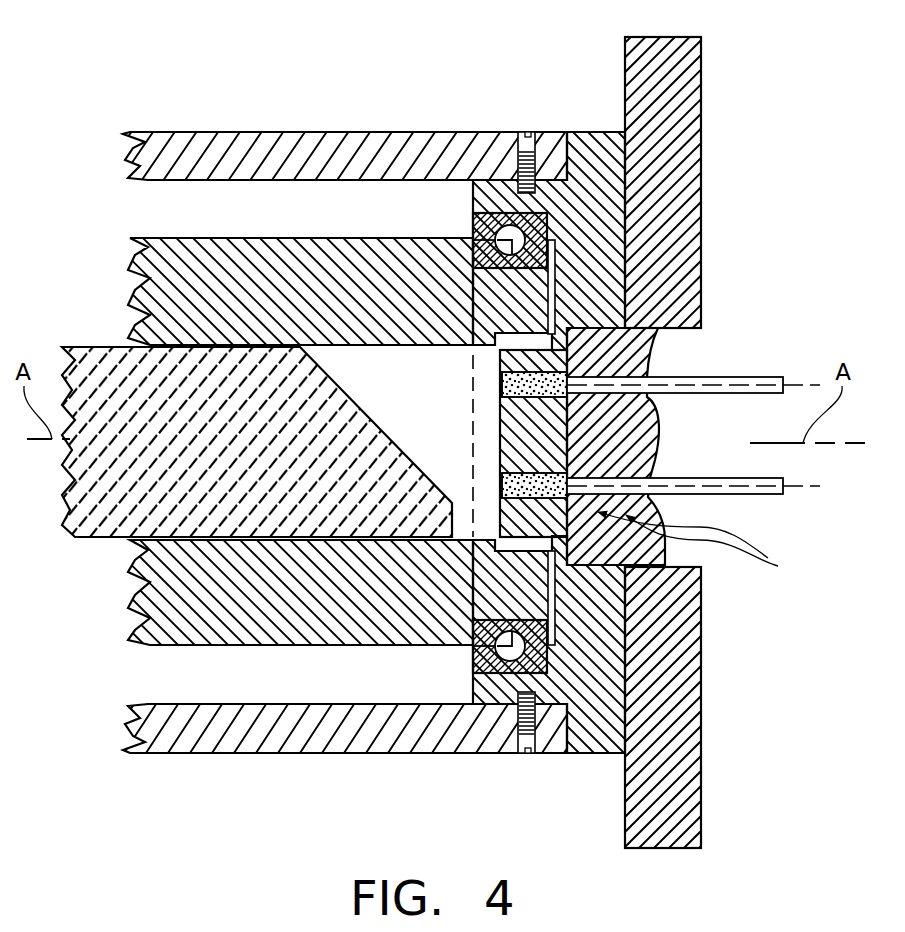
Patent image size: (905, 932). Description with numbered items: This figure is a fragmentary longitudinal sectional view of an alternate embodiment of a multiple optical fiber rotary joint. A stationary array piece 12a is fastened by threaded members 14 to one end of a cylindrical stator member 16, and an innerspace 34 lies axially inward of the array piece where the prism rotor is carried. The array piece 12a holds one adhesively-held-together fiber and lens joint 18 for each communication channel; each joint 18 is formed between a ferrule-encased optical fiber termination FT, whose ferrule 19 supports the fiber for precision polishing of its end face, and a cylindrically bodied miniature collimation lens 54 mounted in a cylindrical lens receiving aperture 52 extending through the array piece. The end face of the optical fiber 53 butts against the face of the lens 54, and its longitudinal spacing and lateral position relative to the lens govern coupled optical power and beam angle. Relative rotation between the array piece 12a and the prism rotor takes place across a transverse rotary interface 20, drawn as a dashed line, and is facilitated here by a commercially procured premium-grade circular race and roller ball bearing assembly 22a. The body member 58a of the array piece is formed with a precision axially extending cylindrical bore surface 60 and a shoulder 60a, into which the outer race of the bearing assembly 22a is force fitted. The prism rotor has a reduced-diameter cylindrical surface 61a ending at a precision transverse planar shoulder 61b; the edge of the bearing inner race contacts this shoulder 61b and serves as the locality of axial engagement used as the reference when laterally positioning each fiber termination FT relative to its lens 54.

The array piece 12a is at (555, 355).
The threaded members 14 is at (517, 163).
The cylindrical stator member 16 is at (352, 157).
The fiber and lens joint 18 is at (572, 450).
The ferrule 19 is at (622, 365).
The transverse rotary interface 20 is at (470, 358).
The roller ball bearing assembly 22a is at (558, 630).
The innerspace 34 is at (278, 684).
The lens receiving aperture 52 is at (502, 396).
The optical fiber 53 is at (737, 380).
The cylindrical bodied miniature collimation lens 54 is at (502, 486).
The body member 58a is at (605, 207).
The cylindrical bore surface 60 is at (473, 665).
The shoulder 60a is at (512, 200).
The cylindrical surface 61a is at (475, 647).
The shoulder 61b is at (497, 240).
The optical fiber termination FT is at (697, 550).